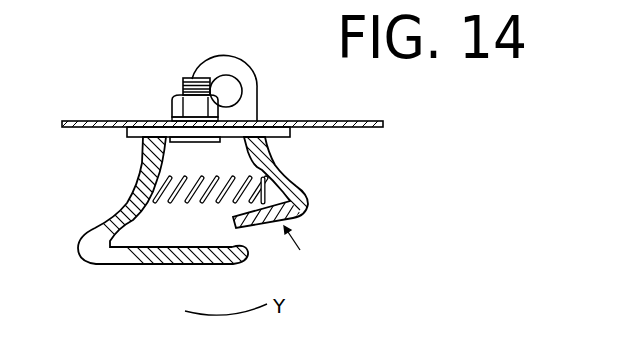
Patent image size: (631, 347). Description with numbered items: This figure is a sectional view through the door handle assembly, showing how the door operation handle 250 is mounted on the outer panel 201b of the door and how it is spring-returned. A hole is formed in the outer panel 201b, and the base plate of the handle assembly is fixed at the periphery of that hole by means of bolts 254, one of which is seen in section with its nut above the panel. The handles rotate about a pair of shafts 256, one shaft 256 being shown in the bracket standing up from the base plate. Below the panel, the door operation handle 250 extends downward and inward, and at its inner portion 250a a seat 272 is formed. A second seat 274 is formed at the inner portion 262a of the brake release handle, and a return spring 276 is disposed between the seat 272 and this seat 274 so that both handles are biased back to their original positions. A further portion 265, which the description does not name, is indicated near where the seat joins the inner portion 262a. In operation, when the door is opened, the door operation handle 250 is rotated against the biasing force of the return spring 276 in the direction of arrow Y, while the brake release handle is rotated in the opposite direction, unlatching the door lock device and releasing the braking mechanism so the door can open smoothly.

The outer panel 201b is at (87, 121).
The bolts 254 is at (183, 79).
The shafts 256 is at (228, 89).
The door operation handle 250 is at (145, 217).
The inner portion of door operation handle 250a is at (97, 227).
The seat 272 is at (209, 177).
The return spring 276 is at (265, 192).
The inner portion of brake release handle 262a is at (278, 183).
The blade / tab 274 is at (292, 214).
The junction / bend 265 is at (308, 250).